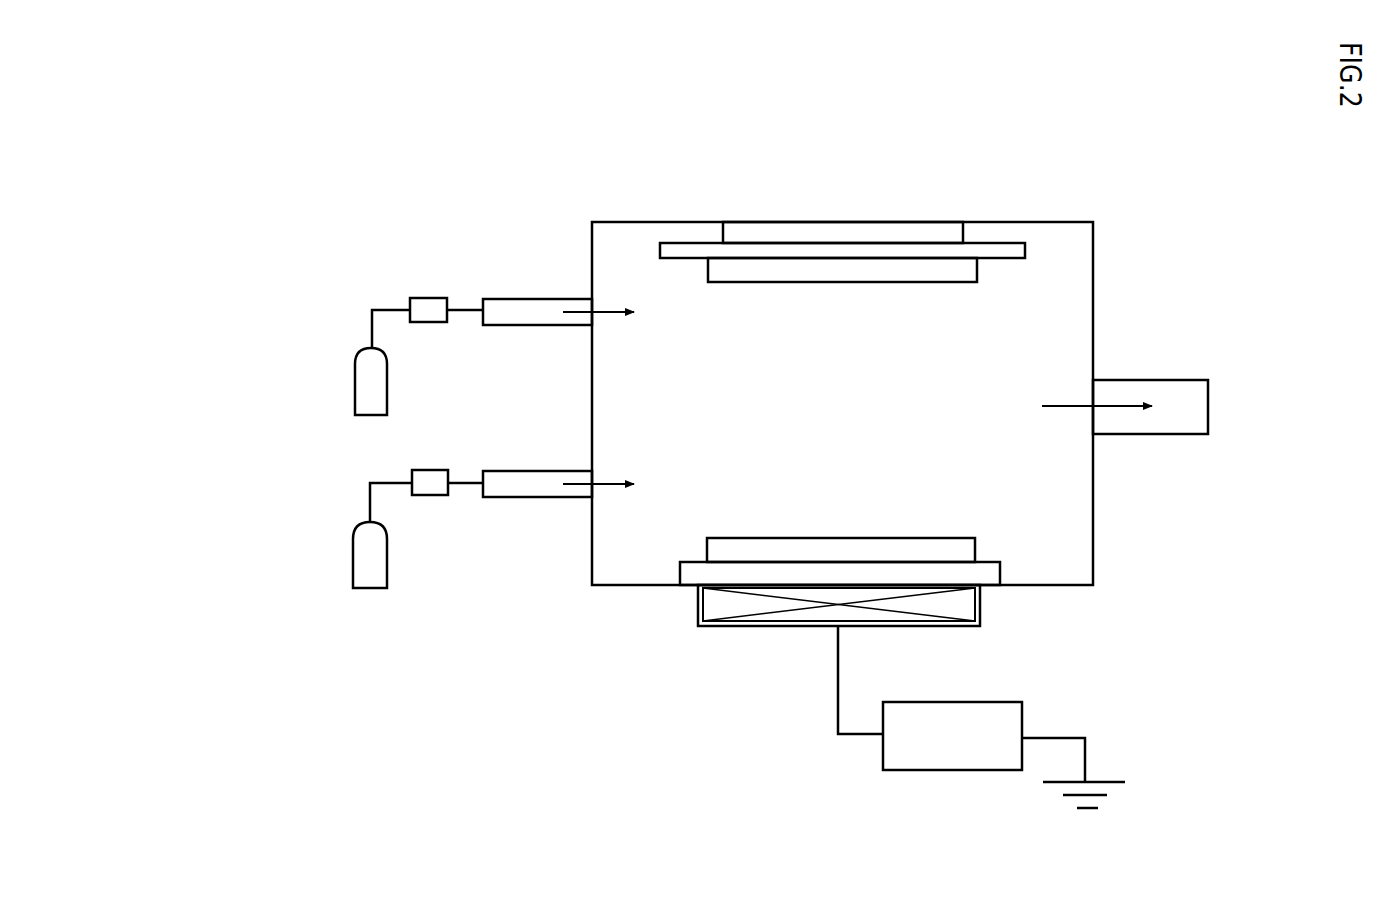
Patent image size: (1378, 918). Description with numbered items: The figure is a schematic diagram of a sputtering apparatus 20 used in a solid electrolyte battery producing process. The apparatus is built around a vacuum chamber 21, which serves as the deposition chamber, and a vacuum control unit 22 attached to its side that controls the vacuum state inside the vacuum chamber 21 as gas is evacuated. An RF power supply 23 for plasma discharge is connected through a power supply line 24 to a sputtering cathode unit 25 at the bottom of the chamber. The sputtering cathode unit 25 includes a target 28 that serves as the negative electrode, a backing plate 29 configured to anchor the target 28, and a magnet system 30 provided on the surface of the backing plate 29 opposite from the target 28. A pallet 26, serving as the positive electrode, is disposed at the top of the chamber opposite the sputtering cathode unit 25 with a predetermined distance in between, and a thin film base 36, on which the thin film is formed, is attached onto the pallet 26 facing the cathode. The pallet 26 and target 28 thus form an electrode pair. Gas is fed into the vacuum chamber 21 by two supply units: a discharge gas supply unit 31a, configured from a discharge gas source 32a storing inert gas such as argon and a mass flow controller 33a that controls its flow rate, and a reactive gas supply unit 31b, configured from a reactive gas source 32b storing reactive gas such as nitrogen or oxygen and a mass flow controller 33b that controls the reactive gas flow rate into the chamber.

The sputtering apparatus 20 is at (656, 729).
The vacuum chamber 21 is at (1035, 220).
The vacuum control unit 22 is at (1148, 422).
The RF power supply 23 is at (893, 772).
The power supply line 24 is at (838, 680).
The sputtering cathode unit 25 is at (932, 612).
The pallet 26 is at (885, 252).
The target 28 is at (975, 553).
The backing plate 29 is at (1000, 580).
The magnet system 30 is at (710, 600).
The discharge gas supply unit 31a is at (297, 500).
The reactive gas supply unit 31b is at (298, 325).
The discharge gas source 32a is at (290, 529).
The reactive gas source 32b is at (287, 352).
The mass flow controller 33a is at (433, 470).
The mass flow controller 33b is at (433, 298).
The thin film base 36 is at (719, 266).